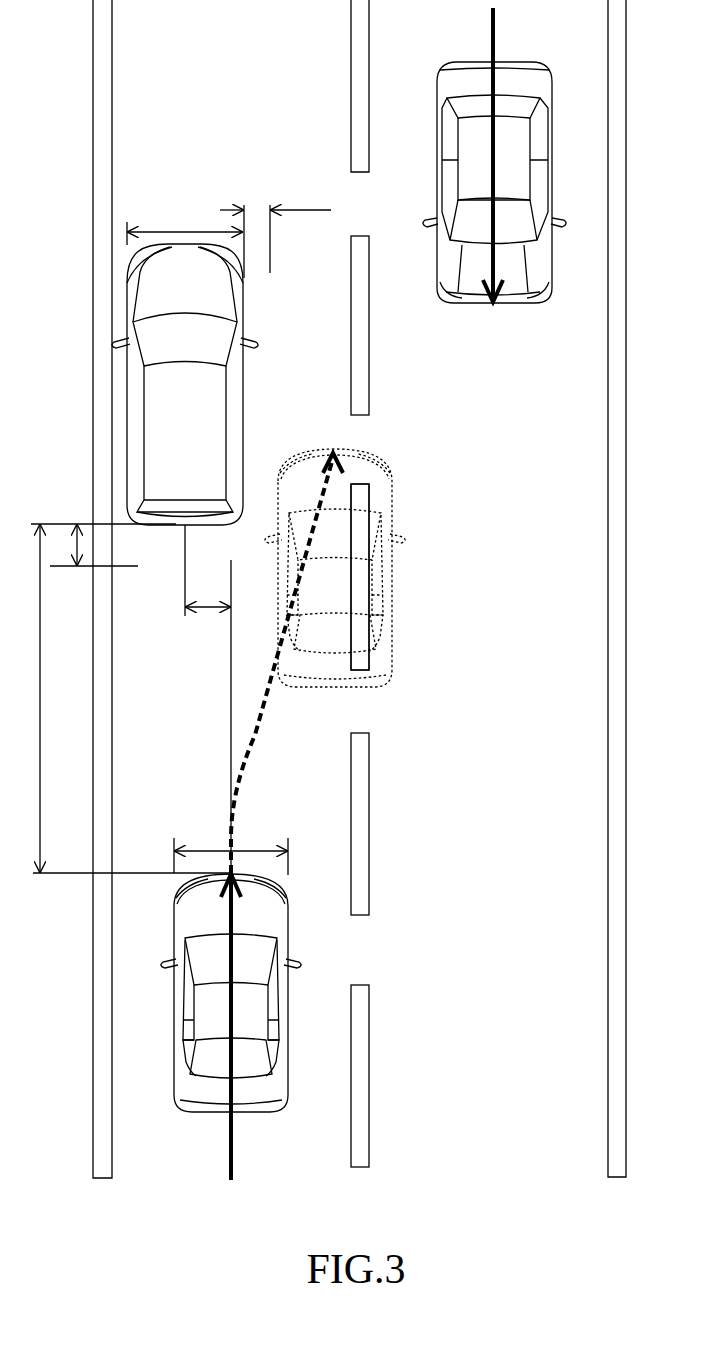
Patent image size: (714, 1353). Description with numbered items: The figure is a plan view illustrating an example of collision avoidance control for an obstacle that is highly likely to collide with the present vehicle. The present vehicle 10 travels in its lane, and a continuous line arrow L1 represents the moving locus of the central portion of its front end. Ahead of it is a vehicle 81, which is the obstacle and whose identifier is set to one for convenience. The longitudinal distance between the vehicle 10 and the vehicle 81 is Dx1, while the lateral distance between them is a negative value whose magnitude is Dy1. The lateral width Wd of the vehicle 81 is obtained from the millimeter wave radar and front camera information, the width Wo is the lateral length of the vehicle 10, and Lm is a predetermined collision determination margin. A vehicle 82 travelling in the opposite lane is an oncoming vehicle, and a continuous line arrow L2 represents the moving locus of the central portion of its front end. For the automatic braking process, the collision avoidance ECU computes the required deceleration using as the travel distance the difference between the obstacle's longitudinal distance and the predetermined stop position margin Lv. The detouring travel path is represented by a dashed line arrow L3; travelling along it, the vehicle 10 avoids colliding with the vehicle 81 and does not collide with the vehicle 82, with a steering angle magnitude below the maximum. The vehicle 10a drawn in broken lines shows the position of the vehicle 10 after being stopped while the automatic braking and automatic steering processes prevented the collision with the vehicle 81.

The vehicle 10 is at (200, 1115).
The vehicle after being stopped 10a is at (395, 612).
The vehicle (obstacle) 81 is at (125, 312).
The oncoming vehicle 82 is at (511, 305).
The continuous line arrow L1 is at (233, 1165).
The continuous line arrow L2 is at (497, 35).
The dashed line arrow L3 is at (258, 735).
The lateral width Wd is at (185, 241).
The collision determination margin Lm is at (275, 228).
The stop position margin Lv is at (103, 545).
The longitudinal distance Dx1 is at (122, 698).
The magnitude of lateral distance Dy1 is at (208, 699).
The width of the vehicle Wo is at (231, 850).